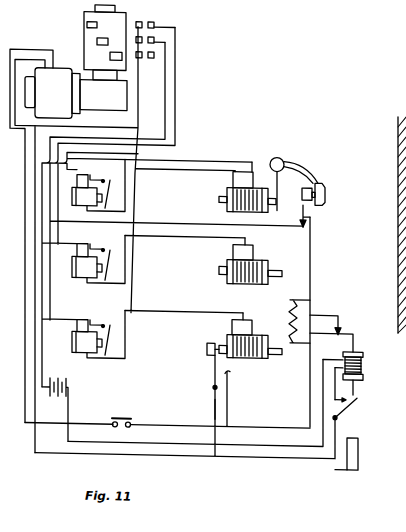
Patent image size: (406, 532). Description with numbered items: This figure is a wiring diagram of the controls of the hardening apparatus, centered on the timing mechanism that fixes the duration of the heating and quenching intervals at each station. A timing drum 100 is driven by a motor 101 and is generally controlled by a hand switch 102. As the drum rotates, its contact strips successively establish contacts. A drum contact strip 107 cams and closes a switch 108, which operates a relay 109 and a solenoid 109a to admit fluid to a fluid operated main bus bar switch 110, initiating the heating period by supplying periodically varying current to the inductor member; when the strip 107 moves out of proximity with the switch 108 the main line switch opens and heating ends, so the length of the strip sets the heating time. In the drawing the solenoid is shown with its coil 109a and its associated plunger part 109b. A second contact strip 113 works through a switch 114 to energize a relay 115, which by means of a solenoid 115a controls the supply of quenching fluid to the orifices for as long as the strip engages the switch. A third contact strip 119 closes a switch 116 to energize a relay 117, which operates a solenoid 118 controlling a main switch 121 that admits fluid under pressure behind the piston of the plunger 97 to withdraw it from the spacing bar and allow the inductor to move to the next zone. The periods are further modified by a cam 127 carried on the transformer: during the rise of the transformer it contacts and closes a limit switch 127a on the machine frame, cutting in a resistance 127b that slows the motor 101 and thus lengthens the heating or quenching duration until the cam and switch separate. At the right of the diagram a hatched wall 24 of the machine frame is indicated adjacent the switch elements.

The timing drum 100 is at (83, 9).
The third contact strip 119 is at (87, 24).
The second contact strip 113 is at (97, 41).
The drum contact strip 107 is at (110, 56).
The motor 101 is at (52, 93).
The switch 116 is at (149, 19).
The switch 114 is at (167, 38).
The switch 108 is at (152, 55).
The relay 117 is at (86, 208).
The relay 115 is at (86, 278).
The relay 109 is at (81, 334).
The solenoid 118 is at (222, 203).
The solenoid 115a is at (254, 247).
The solenoid 109a is at (232, 318).
The solenoid plunger 109b is at (247, 348).
The main switch 121 is at (270, 174).
The plunger 97 is at (317, 176).
The resistance 127b is at (289, 309).
The limit switch 127a is at (355, 403).
The cam 127 is at (358, 447).
The fluid operated main bus bar switch 110 is at (228, 369).
The wall 24 is at (398, 300).
The hand switch 102 is at (127, 413).